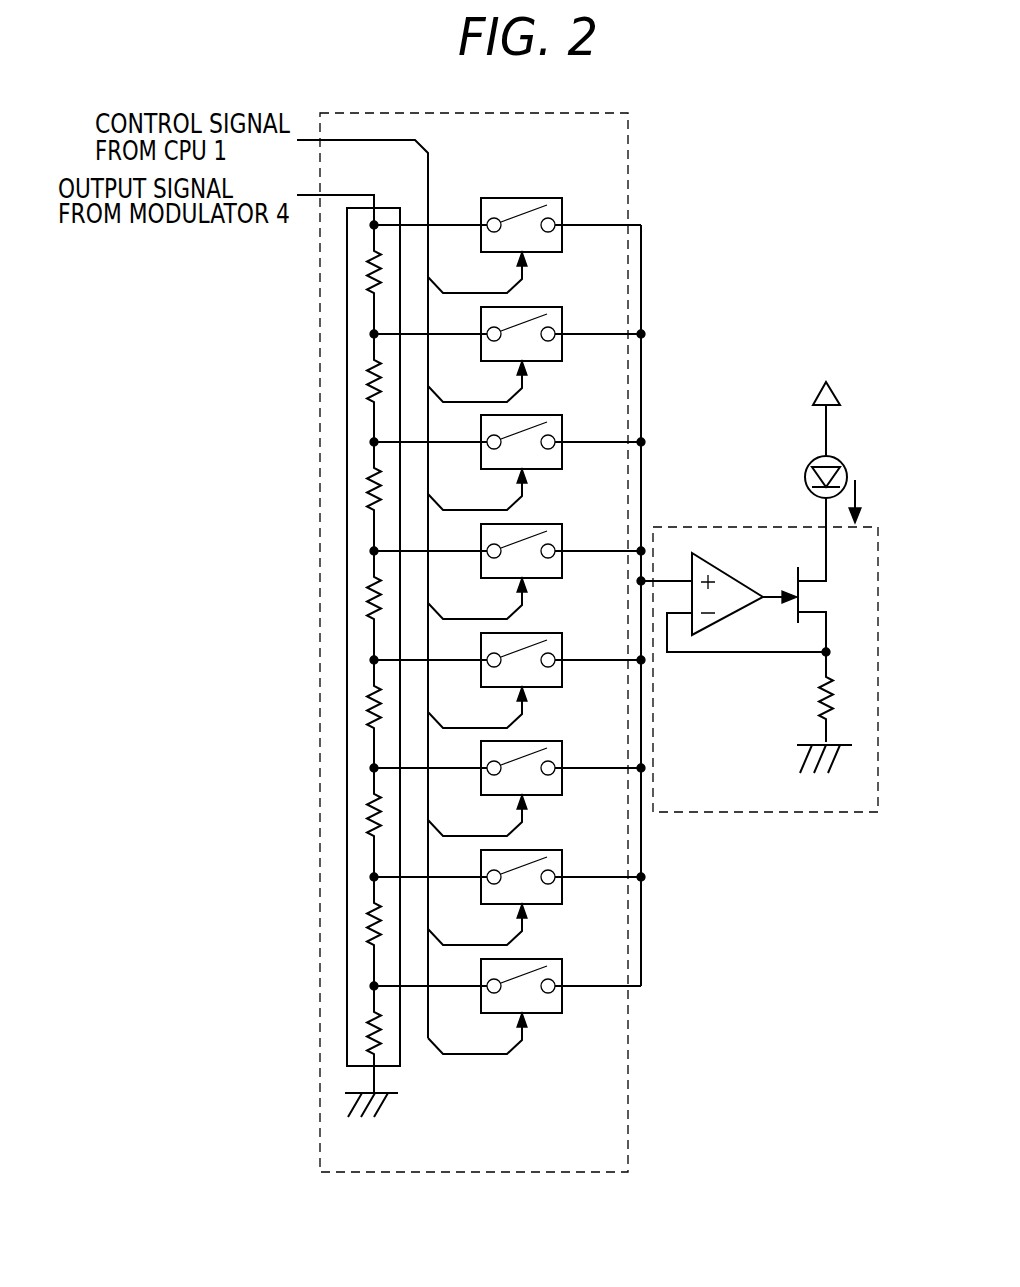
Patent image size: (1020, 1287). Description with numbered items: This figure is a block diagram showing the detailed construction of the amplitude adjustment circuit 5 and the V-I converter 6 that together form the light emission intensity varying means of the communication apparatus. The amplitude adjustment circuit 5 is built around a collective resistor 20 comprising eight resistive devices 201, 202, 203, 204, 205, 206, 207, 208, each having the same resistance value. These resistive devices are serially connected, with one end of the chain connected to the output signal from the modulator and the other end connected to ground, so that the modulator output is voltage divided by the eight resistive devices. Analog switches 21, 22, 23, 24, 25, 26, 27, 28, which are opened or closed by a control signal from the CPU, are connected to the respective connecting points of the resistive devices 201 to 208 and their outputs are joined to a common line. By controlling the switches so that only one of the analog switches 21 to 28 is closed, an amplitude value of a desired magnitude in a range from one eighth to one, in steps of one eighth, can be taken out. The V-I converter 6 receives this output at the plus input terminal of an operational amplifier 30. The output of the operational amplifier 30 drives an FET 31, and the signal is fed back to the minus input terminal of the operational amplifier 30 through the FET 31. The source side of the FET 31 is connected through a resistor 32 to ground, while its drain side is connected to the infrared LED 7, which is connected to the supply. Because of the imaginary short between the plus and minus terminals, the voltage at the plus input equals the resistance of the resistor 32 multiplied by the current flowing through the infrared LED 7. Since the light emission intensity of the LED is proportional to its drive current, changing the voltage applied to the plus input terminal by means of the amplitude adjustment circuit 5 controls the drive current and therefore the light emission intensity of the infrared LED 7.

The amplitude adjustment circuit 5 is at (630, 165).
The collective resistor 20 is at (388, 208).
The resistive device 201 is at (368, 257).
The resistive device 202 is at (368, 366).
The resistive device 203 is at (368, 474).
The resistive device 204 is at (368, 583).
The resistive device 205 is at (368, 692).
The resistive device 206 is at (368, 800).
The resistive device 207 is at (368, 909).
The resistive device 208 is at (368, 1018).
The analog switch 21 is at (565, 213).
The analog switch 22 is at (565, 322).
The analog switch 23 is at (565, 430).
The analog switch 24 is at (565, 539).
The analog switch 25 is at (565, 648).
The analog switch 26 is at (565, 756).
The analog switch 27 is at (565, 865).
The analog switch 28 is at (565, 974).
The V-I converter 6 is at (716, 527).
The operational amplifier 30 is at (738, 572).
The FET 31 is at (803, 594).
The resistor 32 is at (820, 690).
The infrared LED 7 is at (809, 466).